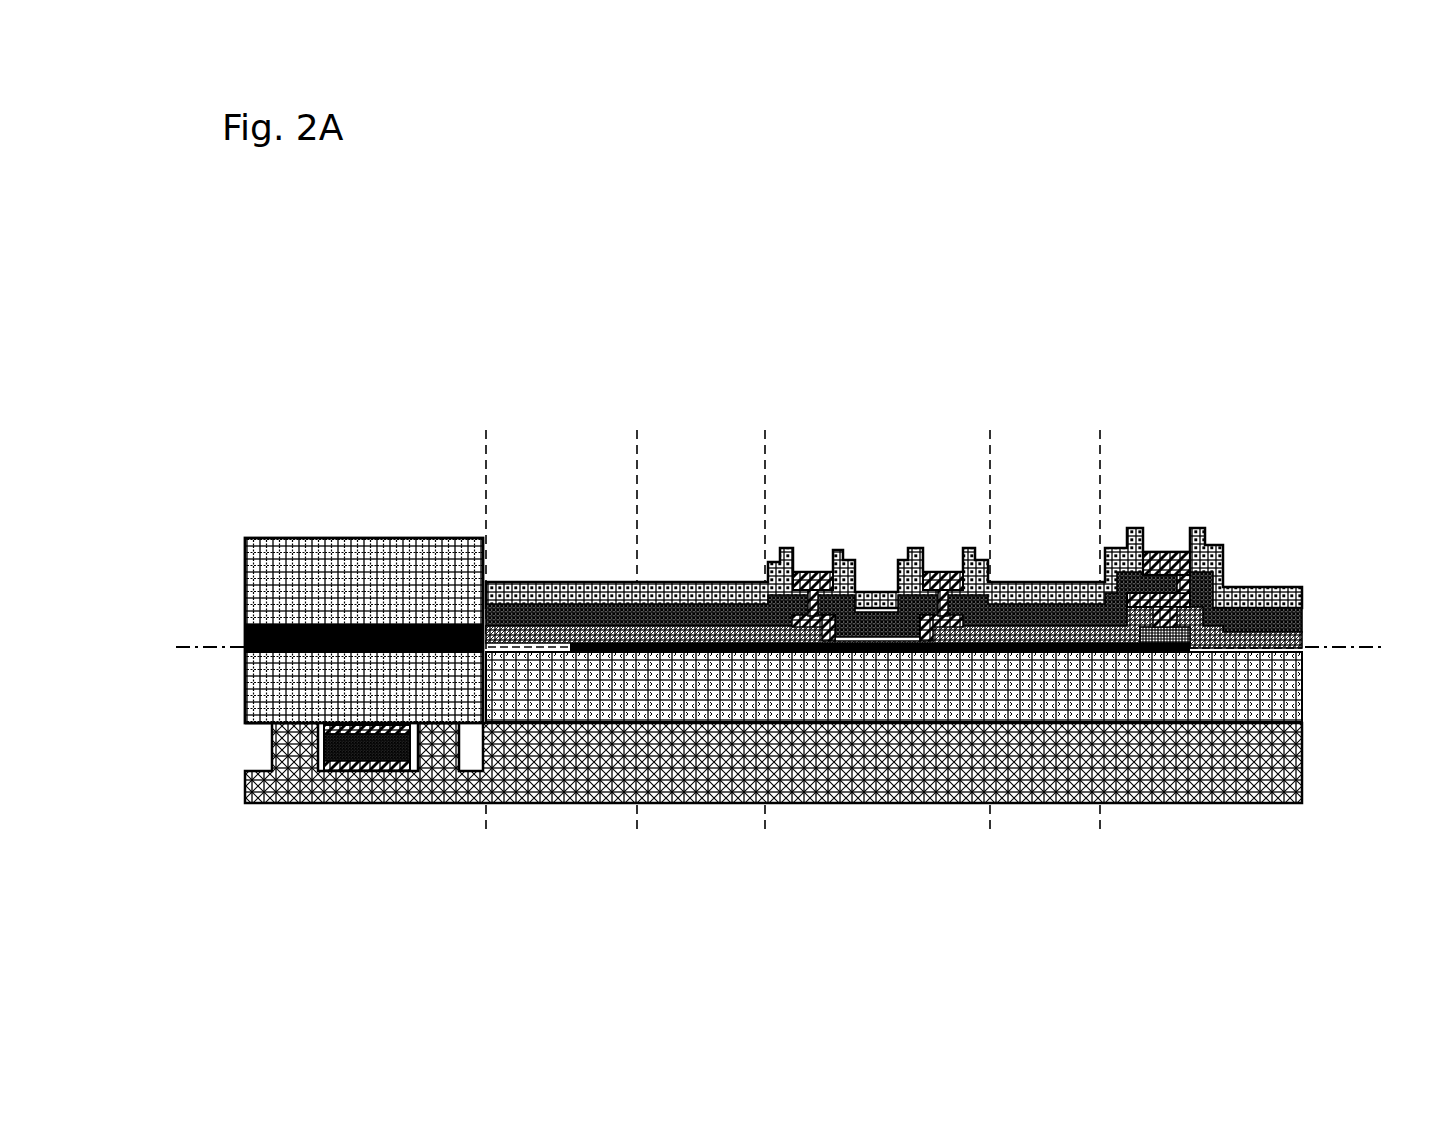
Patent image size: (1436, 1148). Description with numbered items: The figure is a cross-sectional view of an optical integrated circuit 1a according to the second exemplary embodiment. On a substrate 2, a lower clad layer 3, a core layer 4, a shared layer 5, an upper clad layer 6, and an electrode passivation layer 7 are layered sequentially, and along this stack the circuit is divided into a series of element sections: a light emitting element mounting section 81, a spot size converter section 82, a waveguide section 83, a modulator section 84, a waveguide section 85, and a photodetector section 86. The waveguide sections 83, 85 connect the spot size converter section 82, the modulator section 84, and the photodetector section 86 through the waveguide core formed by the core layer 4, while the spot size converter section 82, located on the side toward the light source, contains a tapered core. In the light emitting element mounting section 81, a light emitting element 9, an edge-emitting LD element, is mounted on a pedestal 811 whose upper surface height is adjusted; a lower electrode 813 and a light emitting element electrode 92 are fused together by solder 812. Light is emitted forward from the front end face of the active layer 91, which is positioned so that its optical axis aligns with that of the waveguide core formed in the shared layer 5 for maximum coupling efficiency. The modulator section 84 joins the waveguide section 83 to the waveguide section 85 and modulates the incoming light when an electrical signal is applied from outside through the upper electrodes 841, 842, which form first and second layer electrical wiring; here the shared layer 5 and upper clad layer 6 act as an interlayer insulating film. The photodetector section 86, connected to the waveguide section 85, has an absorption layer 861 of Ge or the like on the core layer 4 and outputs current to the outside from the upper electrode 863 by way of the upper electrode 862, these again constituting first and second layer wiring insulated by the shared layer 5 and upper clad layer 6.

The optical integrated circuit 1a is at (1079, 257).
The substrate 2 is at (1303, 760).
The lower clad layer 3 is at (1303, 692).
The core layer 4 is at (1192, 650).
The shared layer 5 is at (1302, 632).
The upper clad layer 6 is at (1302, 608).
The electrode passivation layer 7 is at (1302, 587).
The light emitting element 9 is at (318, 538).
The active layer 91 is at (245, 634).
The light emitting element electrode 92 is at (415, 769).
The light emitting element mounting section 81 is at (486, 423).
The spot size converter section 82 is at (633, 423).
The waveguide section 83 is at (752, 423).
The modulator section 84 is at (985, 423).
The waveguide section 85 is at (1097, 423).
The photodetector section 86 is at (1243, 423).
The pedestal 811 is at (272, 746).
The solder 812 is at (383, 752).
The lower electrode 813 is at (345, 772).
The upper electrode 841 is at (836, 640).
The upper electrode 842 is at (804, 572).
The absorption layer 861 is at (1175, 630).
The upper electrode 862 is at (1180, 596).
The upper electrode 863 is at (1166, 552).